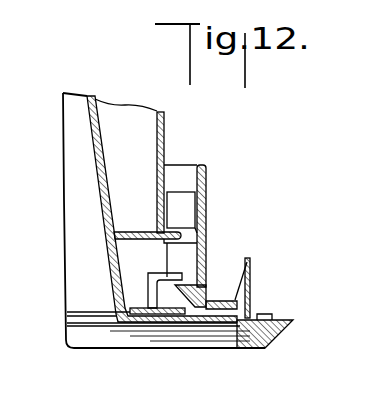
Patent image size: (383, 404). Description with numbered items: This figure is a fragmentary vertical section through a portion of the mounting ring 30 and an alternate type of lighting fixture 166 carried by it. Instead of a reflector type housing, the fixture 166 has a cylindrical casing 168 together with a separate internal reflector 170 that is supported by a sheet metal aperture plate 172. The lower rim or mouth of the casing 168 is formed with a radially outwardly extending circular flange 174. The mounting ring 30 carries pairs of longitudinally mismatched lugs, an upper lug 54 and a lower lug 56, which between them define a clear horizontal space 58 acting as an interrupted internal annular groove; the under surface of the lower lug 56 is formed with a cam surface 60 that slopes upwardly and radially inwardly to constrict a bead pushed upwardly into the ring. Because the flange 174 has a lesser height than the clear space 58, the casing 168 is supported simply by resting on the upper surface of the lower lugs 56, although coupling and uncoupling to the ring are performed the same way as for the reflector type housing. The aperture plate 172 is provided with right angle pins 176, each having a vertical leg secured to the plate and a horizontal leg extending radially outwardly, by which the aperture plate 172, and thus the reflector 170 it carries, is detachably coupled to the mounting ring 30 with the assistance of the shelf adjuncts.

The lighting fixture 166 is at (102, 99).
The cylindrical casing 168 is at (165, 135).
The internal reflector 170 is at (112, 223).
The upper lug 54 is at (183, 196).
The mounting ring 30 is at (211, 195).
The circular flange 174 is at (198, 231).
The clear horizontal space 58 is at (184, 237).
The lower lug 56 is at (170, 250).
The right angle pin 176 is at (150, 275).
The aperture plate 172 is at (173, 323).
The cam surface 60 is at (187, 307).